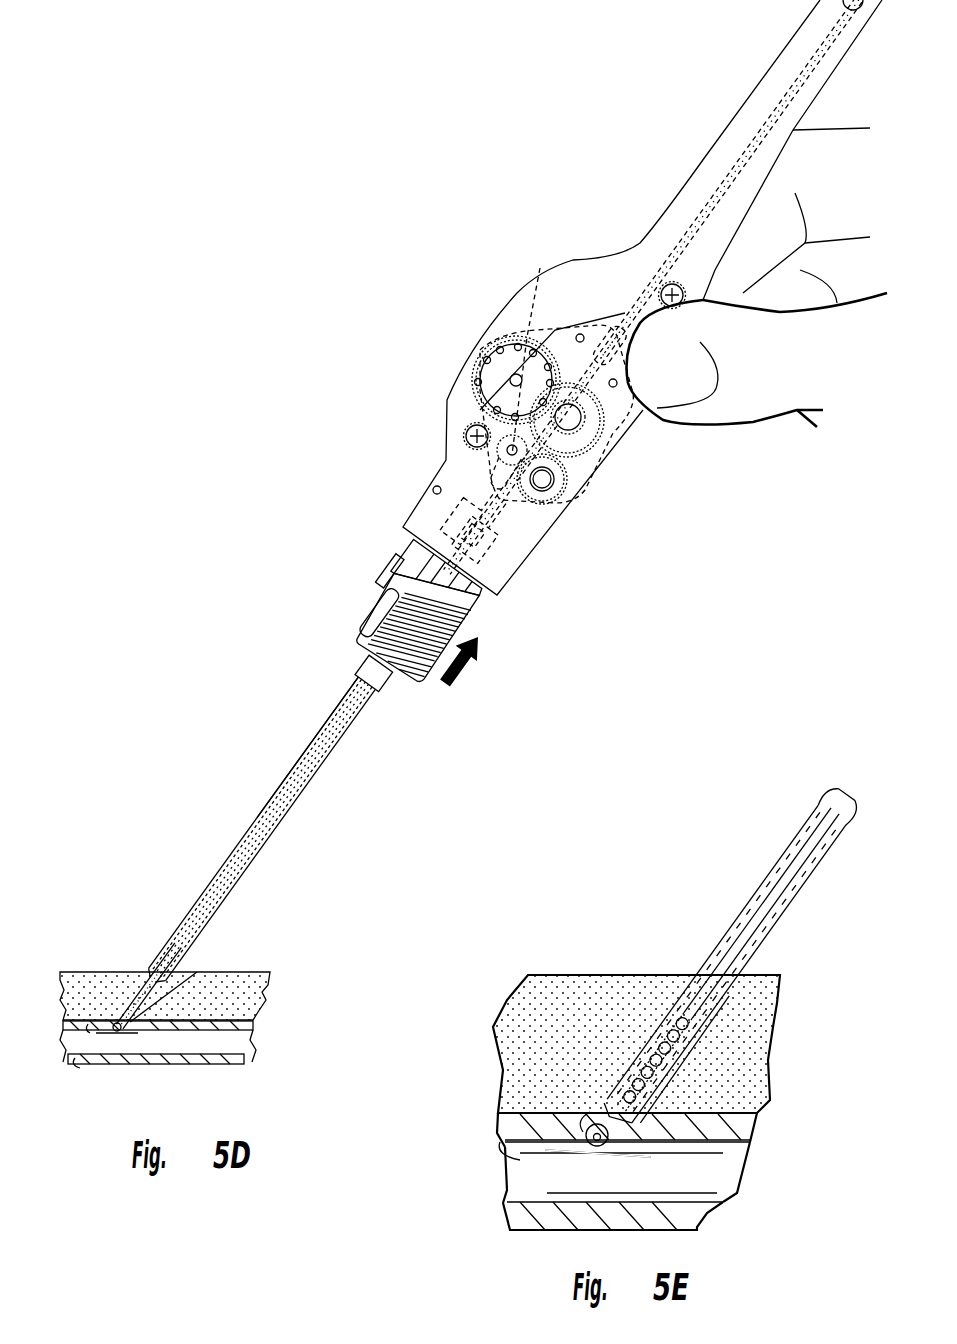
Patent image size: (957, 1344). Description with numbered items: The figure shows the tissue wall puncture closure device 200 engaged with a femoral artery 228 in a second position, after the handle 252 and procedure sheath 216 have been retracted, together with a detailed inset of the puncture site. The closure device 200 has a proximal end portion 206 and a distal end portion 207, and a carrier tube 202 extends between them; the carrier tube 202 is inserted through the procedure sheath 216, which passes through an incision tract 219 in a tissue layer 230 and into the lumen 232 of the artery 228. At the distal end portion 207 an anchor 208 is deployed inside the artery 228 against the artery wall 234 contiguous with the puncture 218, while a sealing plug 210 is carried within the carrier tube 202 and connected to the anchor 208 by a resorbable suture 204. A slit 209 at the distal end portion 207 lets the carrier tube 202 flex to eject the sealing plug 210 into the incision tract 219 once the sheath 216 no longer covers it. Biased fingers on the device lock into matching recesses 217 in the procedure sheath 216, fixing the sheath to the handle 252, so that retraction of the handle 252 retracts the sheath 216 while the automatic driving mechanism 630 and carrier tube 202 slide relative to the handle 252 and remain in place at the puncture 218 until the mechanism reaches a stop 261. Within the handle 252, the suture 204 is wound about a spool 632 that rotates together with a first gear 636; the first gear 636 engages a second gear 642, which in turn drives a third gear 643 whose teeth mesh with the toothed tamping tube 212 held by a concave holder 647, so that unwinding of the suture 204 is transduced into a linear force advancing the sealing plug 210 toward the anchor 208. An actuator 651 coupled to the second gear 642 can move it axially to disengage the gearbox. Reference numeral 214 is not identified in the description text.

In FIG. 5D, the tissue wall puncture closure device 200 is at (248, 258).
In FIG. 5D, the carrier tube 202 is at (352, 665).
In FIG. 5E, the carrier tube 202 is at (825, 878).
In FIG. 5D, the suture 204 is at (445, 468).
In FIG. 5E, the suture 204 is at (823, 830).
In FIG. 5D, the proximal end portion 206 is at (400, 503).
In FIG. 5D, the distal end portion 207 is at (138, 955).
In FIG. 5D, the anchor 208 is at (128, 1040).
In FIG. 5E, the anchor 208 is at (553, 1160).
In FIG. 5D, the slit 209 is at (82, 1068).
In FIG. 5E, the slit 209 is at (500, 1142).
In FIG. 5D, the sealing plug 210 is at (117, 1015).
In FIG. 5E, the sealing plug 210 is at (600, 1125).
In FIG. 5D, the tamping tube 212 is at (788, 80).
In FIG. 5E, the tamping tube 212 is at (828, 856).
In FIG. 5D, the needle 214 is at (255, 810).
In FIG. 5D, the procedure sheath 216 is at (330, 740).
In FIG. 5E, the procedure sheath 216 is at (805, 912).
In FIG. 5D, the recesses 217 is at (385, 555).
In FIG. 5D, the puncture 218 is at (100, 1028).
In FIG. 5E, the puncture 218 is at (585, 1140).
In FIG. 5D, the incision tract 219 is at (175, 1002).
In FIG. 5E, the incision tract 219 is at (735, 1000).
In FIG. 5D, the femoral artery 228 is at (253, 1028).
In FIG. 5E, the femoral artery 228 is at (745, 1142).
In FIG. 5D, the tissue layer 230 is at (250, 973).
In FIG. 5E, the tissue layer 230 is at (793, 1008).
In FIG. 5D, the lumen 232 is at (250, 1045).
In FIG. 5E, the lumen 232 is at (715, 1182).
In FIG. 5D, the artery wall 234 is at (193, 1033).
In FIG. 5E, the artery wall 234 is at (742, 1128).
In FIG. 5D, the handle 252 is at (447, 385).
In FIG. 5D, the stop 261 is at (470, 563).
In FIG. 5D, the automatic driving mechanism 630 is at (513, 335).
In FIG. 5D, the spool 632 is at (480, 350).
In FIG. 5D, the first gear 636 is at (495, 445).
In FIG. 5D, the second gear 642 is at (615, 440).
In FIG. 5D, the third gear 643 is at (572, 507).
In FIG. 5D, the concave holder 647 is at (578, 330).
In FIG. 5D, the actuator 651 is at (580, 430).